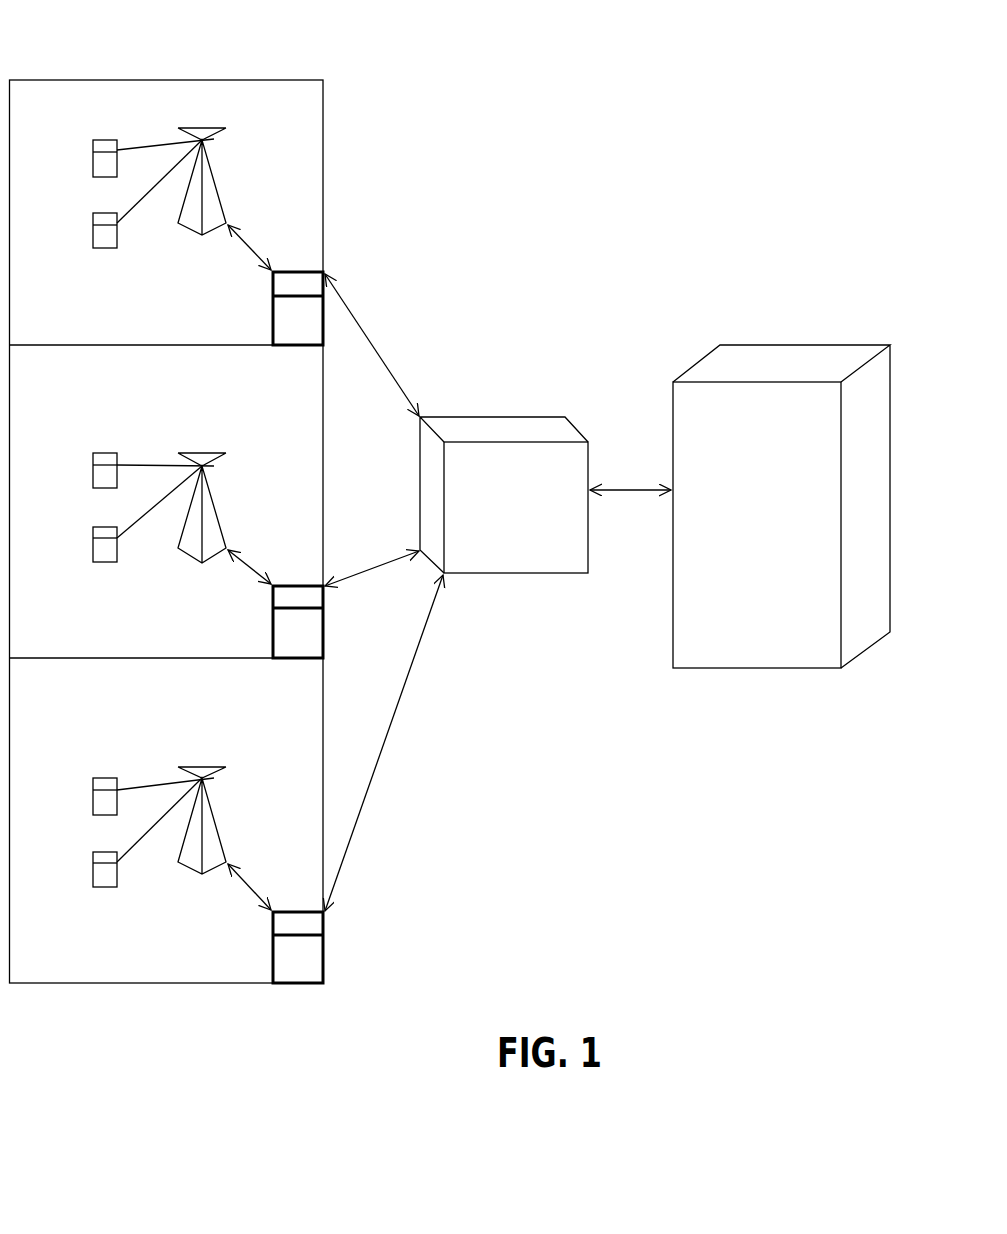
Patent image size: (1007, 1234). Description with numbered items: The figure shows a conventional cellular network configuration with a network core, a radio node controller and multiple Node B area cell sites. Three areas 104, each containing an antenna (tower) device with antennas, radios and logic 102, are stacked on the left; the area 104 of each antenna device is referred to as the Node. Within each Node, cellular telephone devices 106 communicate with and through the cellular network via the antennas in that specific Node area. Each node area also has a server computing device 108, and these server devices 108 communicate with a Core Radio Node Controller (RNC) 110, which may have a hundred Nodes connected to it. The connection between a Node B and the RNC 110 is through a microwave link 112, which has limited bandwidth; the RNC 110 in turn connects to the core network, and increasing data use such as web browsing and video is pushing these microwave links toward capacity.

The antennas, radios and logic 102 is at (214, 128).
The area 104 is at (323, 128).
The cellular telephone devices 106 is at (105, 887).
The server computing device 108 is at (298, 983).
The Core Radio Node Controller (RNC) 110 is at (528, 573).
The microwave link 112 is at (383, 345).